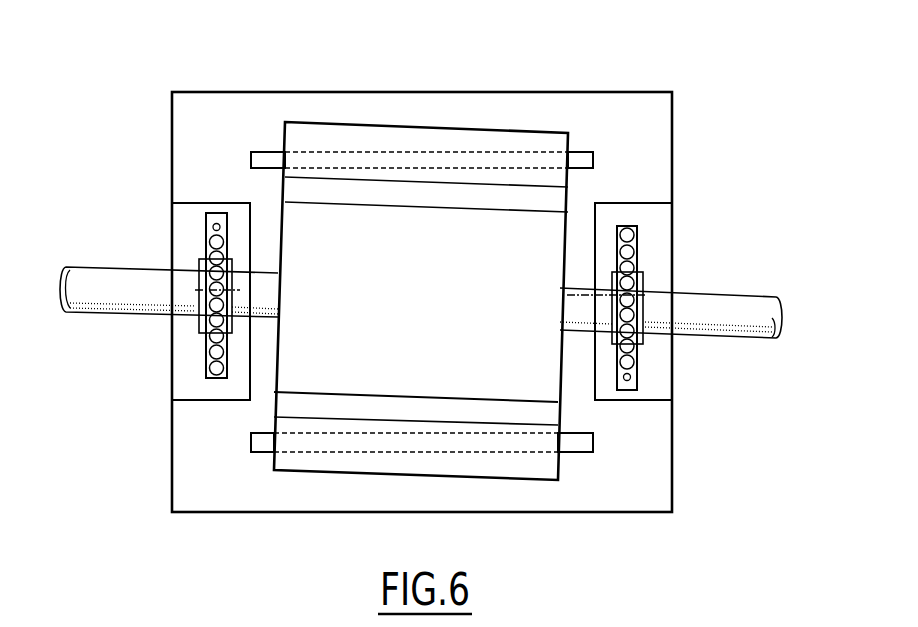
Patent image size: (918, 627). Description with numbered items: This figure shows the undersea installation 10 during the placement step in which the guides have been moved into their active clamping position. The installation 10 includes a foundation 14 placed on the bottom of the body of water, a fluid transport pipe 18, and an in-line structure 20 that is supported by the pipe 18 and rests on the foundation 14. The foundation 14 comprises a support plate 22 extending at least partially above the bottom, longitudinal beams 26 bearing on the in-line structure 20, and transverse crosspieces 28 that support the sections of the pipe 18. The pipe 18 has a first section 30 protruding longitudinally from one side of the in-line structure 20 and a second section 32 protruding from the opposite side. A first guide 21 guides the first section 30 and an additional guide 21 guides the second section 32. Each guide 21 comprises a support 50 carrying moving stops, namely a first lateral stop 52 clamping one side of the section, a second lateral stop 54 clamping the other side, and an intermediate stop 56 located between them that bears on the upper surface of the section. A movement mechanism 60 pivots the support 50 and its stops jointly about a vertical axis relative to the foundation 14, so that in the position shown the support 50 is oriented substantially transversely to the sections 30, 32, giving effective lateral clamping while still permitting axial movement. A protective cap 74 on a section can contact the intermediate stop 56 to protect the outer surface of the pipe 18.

The undersea installation 10 is at (710, 87).
The foundation 14 is at (704, 480).
The fluid transport pipe 18 is at (108, 250).
The in-line structure 20 is at (484, 114).
The guide 21 is at (205, 416).
The support plate 22 is at (652, 147).
The longitudinal beams 26 is at (270, 152).
The transverse crosspieces 28 is at (176, 386).
The first section 30 is at (78, 268).
The second section 32 is at (750, 292).
The support 50 is at (218, 213).
The first lateral stop 52 is at (210, 259).
The second lateral stop 54 is at (205, 322).
The intermediate stop 56 is at (225, 290).
The movement mechanism 60 is at (213, 228).
The protective cap 74 is at (200, 297).